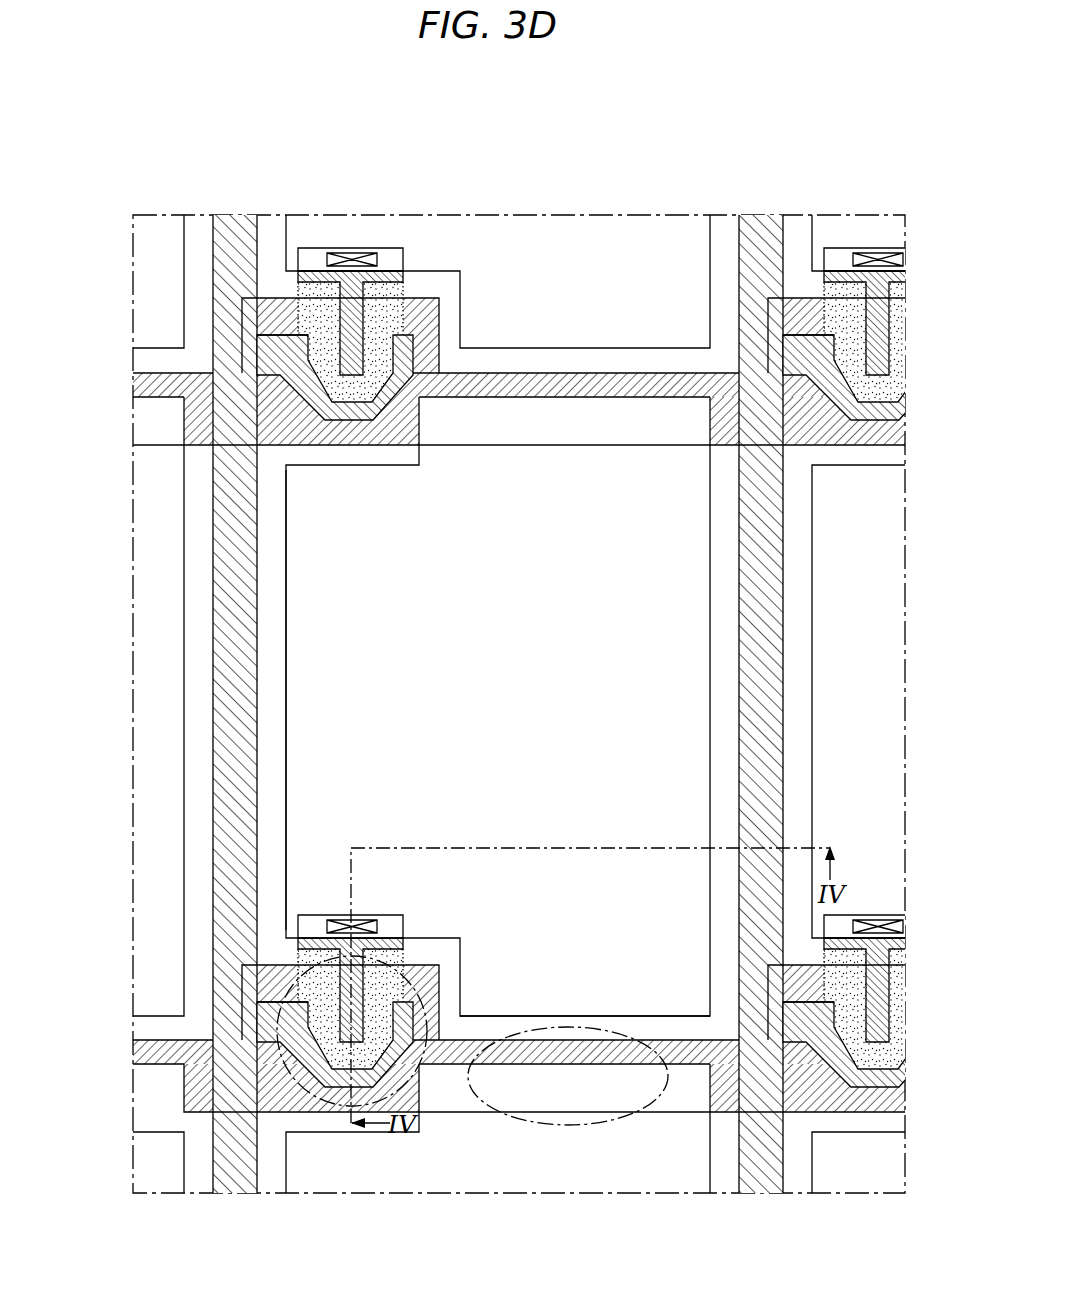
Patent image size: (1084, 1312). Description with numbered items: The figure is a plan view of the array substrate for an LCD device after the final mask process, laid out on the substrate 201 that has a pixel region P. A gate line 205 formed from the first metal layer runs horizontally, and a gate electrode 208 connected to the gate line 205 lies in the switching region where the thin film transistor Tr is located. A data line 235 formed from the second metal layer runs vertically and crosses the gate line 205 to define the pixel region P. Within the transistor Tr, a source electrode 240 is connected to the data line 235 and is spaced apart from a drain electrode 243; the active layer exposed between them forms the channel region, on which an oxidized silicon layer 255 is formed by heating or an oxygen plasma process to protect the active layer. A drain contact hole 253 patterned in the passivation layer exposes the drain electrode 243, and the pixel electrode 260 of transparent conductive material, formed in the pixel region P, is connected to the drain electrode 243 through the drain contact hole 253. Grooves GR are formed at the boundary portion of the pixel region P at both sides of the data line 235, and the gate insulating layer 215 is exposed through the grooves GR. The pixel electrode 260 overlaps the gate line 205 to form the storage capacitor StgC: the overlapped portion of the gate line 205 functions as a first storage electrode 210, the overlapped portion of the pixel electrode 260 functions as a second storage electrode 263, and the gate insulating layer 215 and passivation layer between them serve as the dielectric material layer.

The substrate 201 is at (722, 166).
The gate line 205 is at (145, 1053).
The gate electrode 208 is at (355, 995).
The first storage electrode 210 is at (625, 1100).
The gate insulating layer 215 is at (268, 522).
The data line 235 is at (230, 735).
The source electrode 240 is at (403, 1017).
The drain electrode 243 is at (330, 958).
The drain contact hole 253 is at (332, 920).
The oxidized silicon layer 255 is at (373, 1053).
The pixel electrode 260 is at (270, 797).
The second storage electrode 263 is at (554, 1080).
The grooves GR is at (250, 672).
The pixel region P is at (328, 601).
The thin film transistor Tr is at (337, 1113).
The storage capacitor StgC is at (568, 1027).